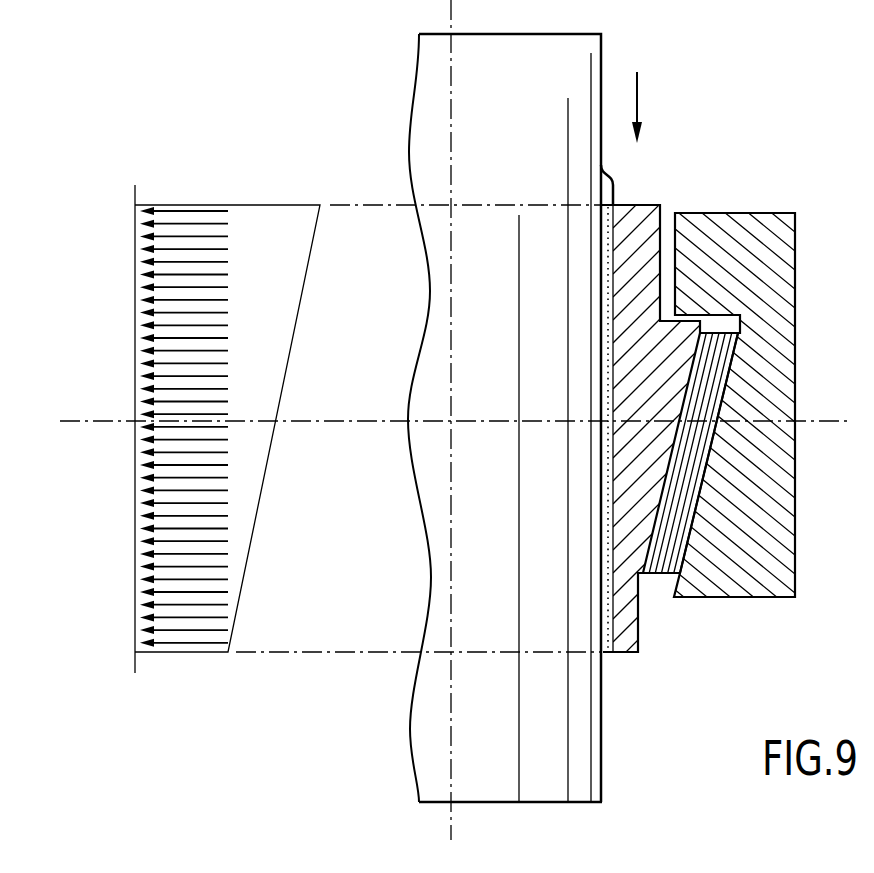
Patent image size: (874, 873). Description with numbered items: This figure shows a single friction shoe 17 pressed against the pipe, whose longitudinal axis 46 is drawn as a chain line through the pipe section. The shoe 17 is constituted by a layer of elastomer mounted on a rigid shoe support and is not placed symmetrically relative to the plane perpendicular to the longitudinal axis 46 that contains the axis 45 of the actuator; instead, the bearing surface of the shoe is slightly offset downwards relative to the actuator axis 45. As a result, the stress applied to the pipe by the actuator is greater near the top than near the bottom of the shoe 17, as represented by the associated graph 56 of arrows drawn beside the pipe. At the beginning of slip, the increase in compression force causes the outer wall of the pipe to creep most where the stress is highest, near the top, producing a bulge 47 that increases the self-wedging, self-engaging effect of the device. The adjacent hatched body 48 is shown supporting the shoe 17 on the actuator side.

The friction shoe 17 is at (608, 655).
The axis of the actuator 45 is at (78, 420).
The longitudinal axis of the pipe 46 is at (453, 825).
The bulge 47 is at (615, 183).
The housing 48 is at (743, 319).
The graph 56 is at (200, 205).